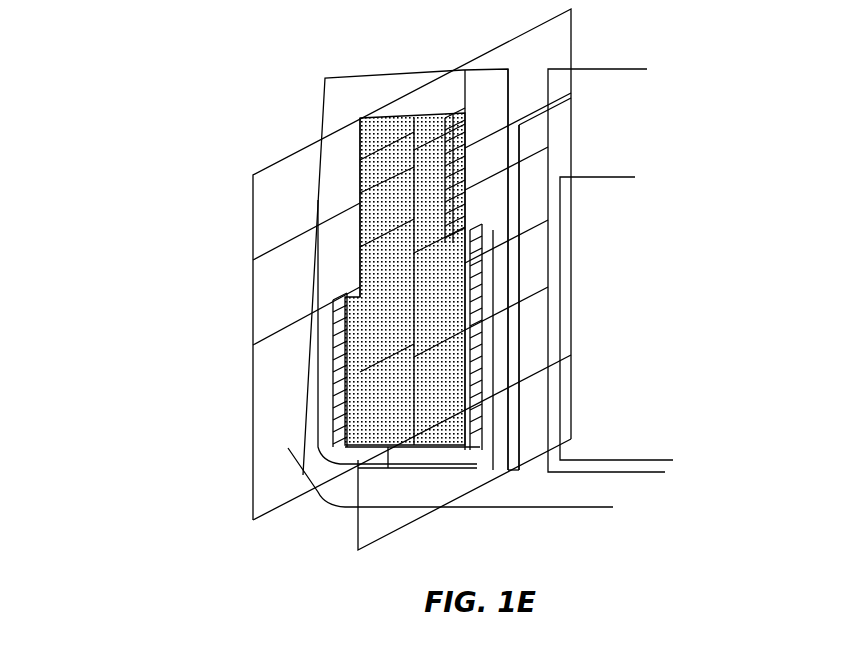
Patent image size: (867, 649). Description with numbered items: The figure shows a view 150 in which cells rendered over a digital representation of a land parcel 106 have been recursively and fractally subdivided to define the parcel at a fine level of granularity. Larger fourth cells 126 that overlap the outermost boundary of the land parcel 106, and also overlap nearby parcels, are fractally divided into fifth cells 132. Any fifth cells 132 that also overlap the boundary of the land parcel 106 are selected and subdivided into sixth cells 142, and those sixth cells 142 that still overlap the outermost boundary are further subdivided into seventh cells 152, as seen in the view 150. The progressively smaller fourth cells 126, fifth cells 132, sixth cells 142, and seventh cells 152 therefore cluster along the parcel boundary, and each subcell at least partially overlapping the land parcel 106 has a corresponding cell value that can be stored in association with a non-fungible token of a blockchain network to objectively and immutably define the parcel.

The view 150 is at (138, 88).
The land parcel 106 is at (399, 277).
The sixth cells 142 is at (490, 396).
The seventh cells 152 is at (470, 420).
The fifth cells 132 is at (510, 433).
The fourth cells 126 is at (540, 457).